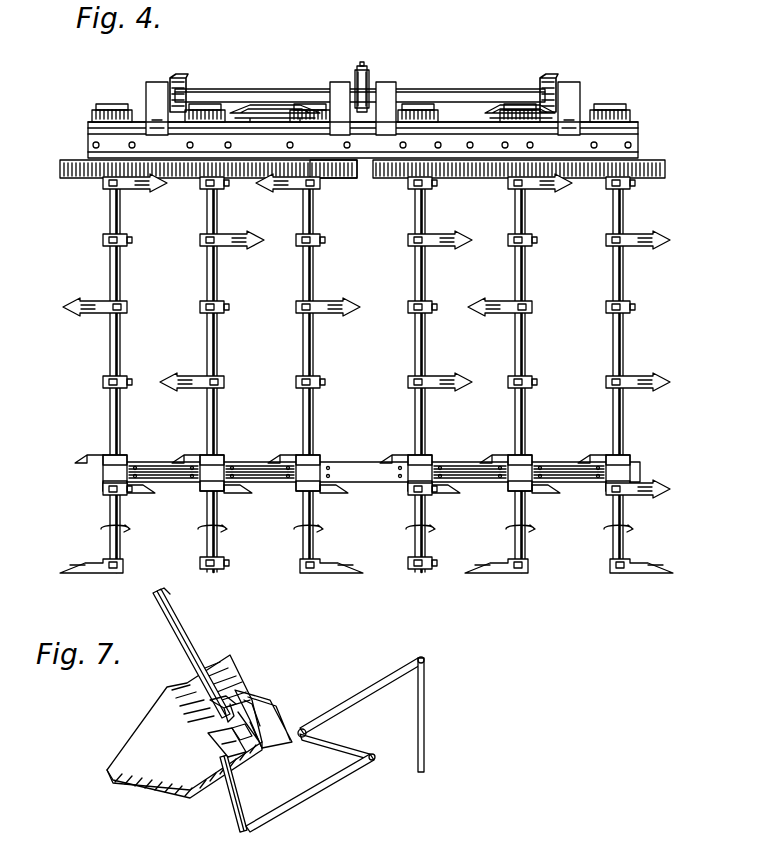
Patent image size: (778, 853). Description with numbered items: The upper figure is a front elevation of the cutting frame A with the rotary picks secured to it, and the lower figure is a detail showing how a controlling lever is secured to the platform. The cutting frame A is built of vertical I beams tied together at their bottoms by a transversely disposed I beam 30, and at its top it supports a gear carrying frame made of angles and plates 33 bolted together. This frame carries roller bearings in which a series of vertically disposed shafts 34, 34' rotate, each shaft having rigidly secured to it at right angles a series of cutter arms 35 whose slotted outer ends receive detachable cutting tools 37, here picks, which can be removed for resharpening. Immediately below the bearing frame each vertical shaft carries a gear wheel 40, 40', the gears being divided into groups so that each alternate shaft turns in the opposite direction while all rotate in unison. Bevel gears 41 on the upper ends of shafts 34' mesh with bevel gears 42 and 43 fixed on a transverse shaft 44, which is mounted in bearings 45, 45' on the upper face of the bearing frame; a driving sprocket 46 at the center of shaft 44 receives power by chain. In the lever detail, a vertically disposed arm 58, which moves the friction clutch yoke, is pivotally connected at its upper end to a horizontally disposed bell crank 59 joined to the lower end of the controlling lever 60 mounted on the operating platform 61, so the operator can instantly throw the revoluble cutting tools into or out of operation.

In FIG. 4, the transversely disposed I beam 30 is at (466, 478).
In FIG. 4, the angles and plates 33 is at (255, 145).
In FIG. 4, the vertically disposed shaft 34 is at (382, 375).
In FIG. 4, the vertically disposed shaft 34' is at (388, 375).
In FIG. 4, the cutter arm 35 is at (200, 305).
In FIG. 4, the cutting tool 37 is at (582, 136).
In FIG. 4, the gear wheel 40 is at (361, 180).
In FIG. 4, the gear wheel 40' is at (338, 182).
In FIG. 4, the bevel gear 41 is at (226, 98).
In FIG. 4, the bevel gear 42 is at (548, 80).
In FIG. 4, the bevel gear 43 is at (180, 84).
In FIG. 4, the shaft 44 is at (418, 92).
In FIG. 4, the bearing 45 is at (574, 90).
In FIG. 4, the bearing 45' is at (143, 96).
In FIG. 4, the driving sprocket 46 is at (366, 74).
In FIG. 4, the cutting frame A is at (476, 132).
In FIG. 7, the vertically disposed arm 58 is at (425, 722).
In FIG. 7, the bell crank 59 is at (332, 710).
In FIG. 7, the controlling lever 60 is at (197, 658).
In FIG. 7, the operating platform 61 is at (184, 726).